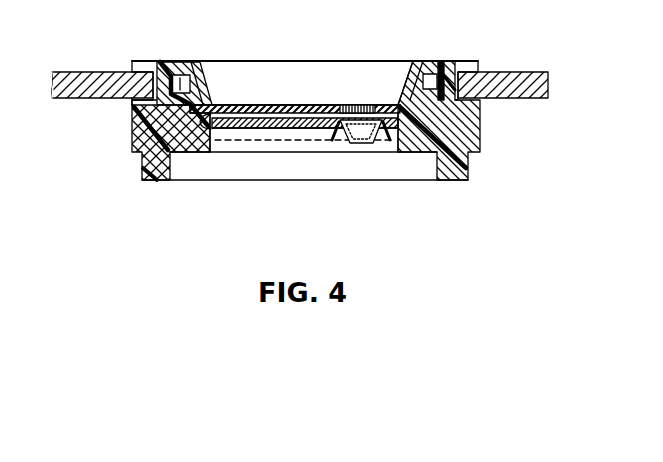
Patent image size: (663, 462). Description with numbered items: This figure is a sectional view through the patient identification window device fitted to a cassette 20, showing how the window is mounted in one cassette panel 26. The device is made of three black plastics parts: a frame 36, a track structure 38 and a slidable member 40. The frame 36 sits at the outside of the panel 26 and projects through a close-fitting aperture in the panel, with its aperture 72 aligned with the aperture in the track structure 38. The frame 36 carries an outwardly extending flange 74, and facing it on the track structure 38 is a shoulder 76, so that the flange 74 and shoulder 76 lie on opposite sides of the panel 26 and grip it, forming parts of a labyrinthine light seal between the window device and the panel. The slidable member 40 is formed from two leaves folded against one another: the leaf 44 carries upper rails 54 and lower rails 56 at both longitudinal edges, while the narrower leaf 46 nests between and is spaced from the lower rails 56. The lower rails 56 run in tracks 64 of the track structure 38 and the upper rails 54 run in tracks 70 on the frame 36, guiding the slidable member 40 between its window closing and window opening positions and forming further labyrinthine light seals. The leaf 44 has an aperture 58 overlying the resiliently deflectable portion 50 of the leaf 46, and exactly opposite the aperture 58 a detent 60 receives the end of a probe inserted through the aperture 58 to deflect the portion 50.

The cassette 20 is at (63, 82).
The panel 26 is at (536, 83).
The frame 36 is at (430, 62).
The track structure 38 is at (464, 165).
The slidable member 40 is at (313, 96).
The leaf 44 is at (278, 105).
The leaf 46 is at (310, 124).
The portion 50 is at (279, 130).
The upper rails 54 is at (177, 78).
The lower rails 56 is at (150, 148).
The aperture 58 is at (358, 105).
The detent 60 is at (357, 143).
The tracks 64 is at (185, 150).
The tracks 70 is at (167, 93).
The aperture 72 is at (241, 61).
The flange 74 is at (132, 67).
The shoulder 76 is at (122, 95).